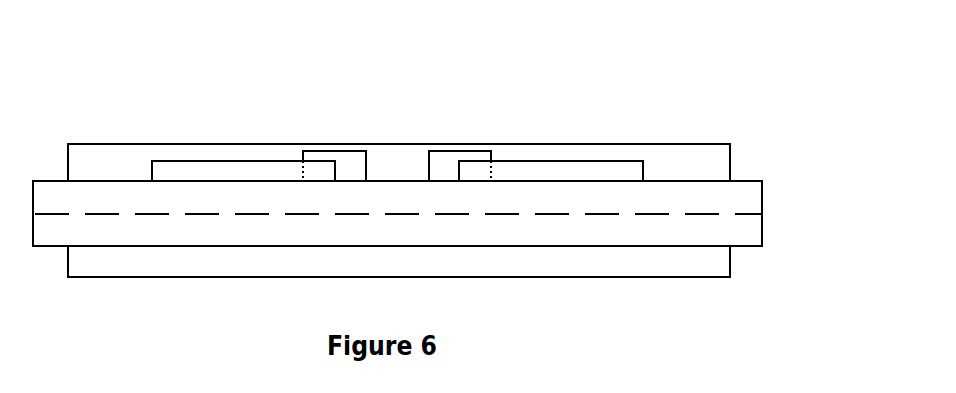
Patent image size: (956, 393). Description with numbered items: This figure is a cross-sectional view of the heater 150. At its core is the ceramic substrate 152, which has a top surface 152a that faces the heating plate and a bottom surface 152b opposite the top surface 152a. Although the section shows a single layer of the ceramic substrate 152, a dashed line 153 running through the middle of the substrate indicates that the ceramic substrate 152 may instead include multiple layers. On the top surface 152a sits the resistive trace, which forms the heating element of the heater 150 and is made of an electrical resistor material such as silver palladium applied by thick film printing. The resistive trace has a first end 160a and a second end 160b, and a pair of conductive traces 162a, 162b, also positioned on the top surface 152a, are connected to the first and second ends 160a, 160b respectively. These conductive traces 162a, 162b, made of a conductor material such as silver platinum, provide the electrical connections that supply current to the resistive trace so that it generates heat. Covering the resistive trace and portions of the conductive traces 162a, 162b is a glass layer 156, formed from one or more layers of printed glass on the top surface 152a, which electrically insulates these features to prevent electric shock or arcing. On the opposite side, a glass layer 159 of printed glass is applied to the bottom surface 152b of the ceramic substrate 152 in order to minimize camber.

The heater 150 is at (702, 55).
The ceramic substrate 152 is at (762, 200).
The top surface 152a is at (748, 181).
The bottom surface 152b is at (752, 247).
The dashed line 153 is at (693, 214).
The glass layer 156 is at (708, 143).
The glass layer 159 is at (731, 273).
The first end 160a is at (562, 160).
The second end 160b is at (223, 158).
The conductive trace 162a is at (449, 151).
The conductive trace 162b is at (345, 151).